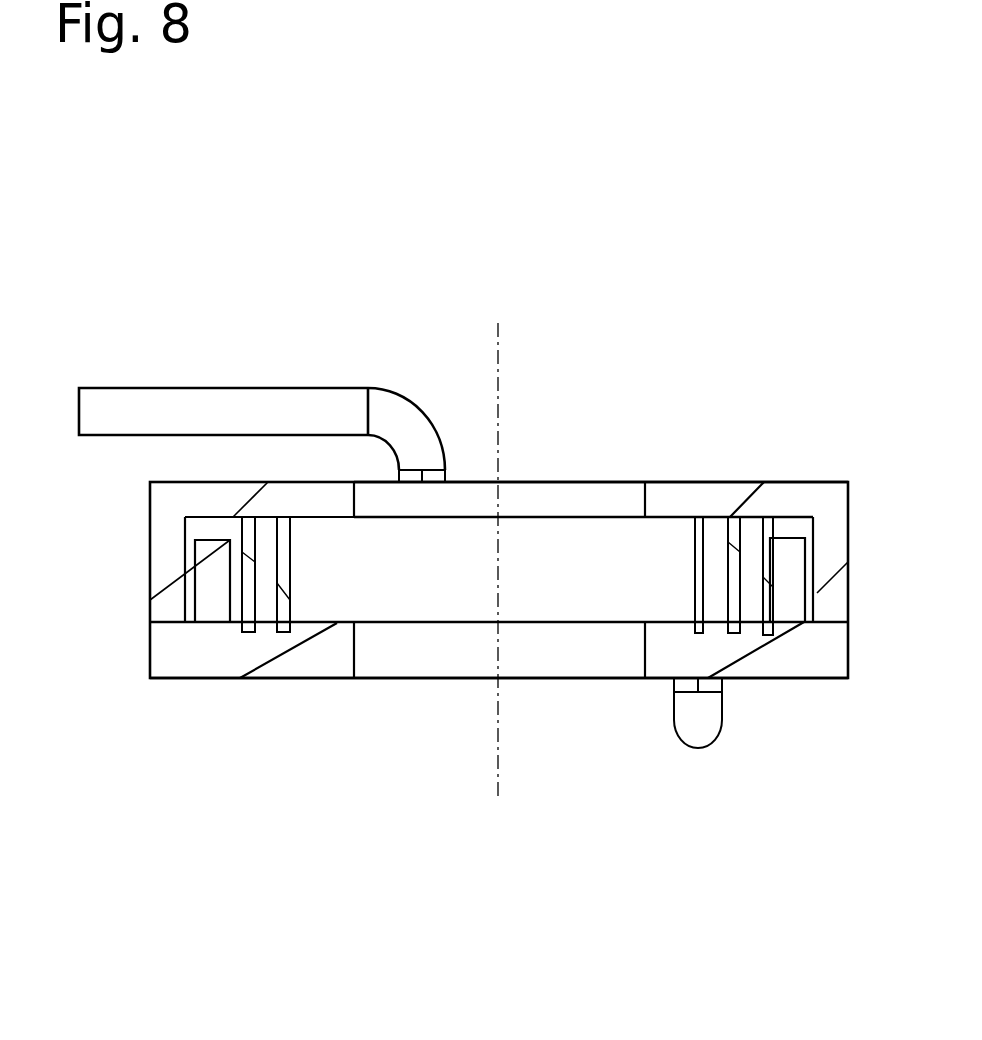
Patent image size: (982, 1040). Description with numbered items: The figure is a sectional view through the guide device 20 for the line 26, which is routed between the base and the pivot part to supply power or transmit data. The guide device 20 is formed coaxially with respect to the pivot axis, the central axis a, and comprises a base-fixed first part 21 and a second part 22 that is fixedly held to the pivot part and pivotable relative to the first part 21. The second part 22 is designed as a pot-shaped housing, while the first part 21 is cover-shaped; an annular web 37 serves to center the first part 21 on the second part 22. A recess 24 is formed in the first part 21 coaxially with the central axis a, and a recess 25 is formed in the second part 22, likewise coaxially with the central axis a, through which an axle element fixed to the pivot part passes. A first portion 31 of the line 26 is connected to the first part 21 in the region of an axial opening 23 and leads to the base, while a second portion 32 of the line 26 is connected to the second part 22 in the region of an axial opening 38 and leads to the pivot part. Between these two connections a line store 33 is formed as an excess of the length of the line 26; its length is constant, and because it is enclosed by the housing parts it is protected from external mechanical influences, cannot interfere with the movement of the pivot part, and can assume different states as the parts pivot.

The guide device 20 is at (833, 480).
The first part 21 is at (231, 647).
The second part 22 is at (705, 480).
The axial opening 23 is at (723, 687).
The recess 24 is at (573, 645).
The recess 25 is at (597, 500).
The line 26 is at (287, 583).
The first portion 31 is at (703, 732).
The second portion 32 is at (188, 418).
The line store 33 is at (337, 583).
The annular web 37 is at (220, 588).
The axial opening 38 is at (453, 472).
The central axis a is at (498, 740).